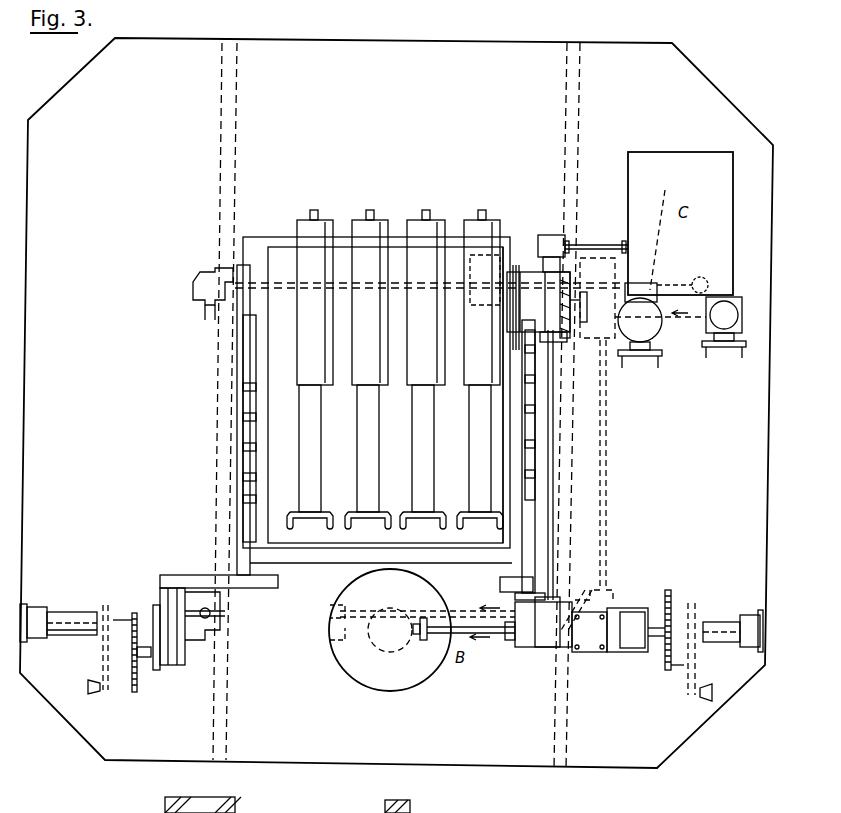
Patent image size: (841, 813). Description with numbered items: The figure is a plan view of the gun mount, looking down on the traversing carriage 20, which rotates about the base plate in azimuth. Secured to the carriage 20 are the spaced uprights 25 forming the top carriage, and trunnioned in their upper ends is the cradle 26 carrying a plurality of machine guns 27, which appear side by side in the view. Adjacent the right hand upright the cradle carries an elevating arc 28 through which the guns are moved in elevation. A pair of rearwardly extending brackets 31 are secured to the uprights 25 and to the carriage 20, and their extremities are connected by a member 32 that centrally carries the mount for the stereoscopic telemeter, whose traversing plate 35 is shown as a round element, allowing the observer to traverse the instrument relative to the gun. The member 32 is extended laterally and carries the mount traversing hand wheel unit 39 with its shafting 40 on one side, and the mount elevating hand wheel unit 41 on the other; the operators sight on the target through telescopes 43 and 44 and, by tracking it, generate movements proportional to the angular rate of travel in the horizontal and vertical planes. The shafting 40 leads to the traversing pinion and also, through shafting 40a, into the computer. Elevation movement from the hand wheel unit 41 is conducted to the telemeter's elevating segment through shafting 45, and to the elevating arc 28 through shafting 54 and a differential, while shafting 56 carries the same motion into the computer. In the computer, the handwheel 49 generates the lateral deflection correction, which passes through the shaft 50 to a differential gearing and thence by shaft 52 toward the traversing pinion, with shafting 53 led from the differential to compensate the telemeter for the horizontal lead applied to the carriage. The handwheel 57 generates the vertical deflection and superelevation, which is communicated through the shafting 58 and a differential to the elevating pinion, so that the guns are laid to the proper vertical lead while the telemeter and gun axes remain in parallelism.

The traversing carriage 20 is at (262, 246).
The uprights 25 is at (248, 345).
The cradle 26 is at (395, 448).
The machine guns 27 is at (367, 236).
The elevating arc 28 is at (510, 440).
The brackets 31 is at (245, 541).
The member 32 is at (273, 588).
The traversing plate 35 is at (355, 672).
The mount traversing hand wheel unit 39 is at (131, 688).
The shafting 40 is at (210, 318).
The shafting 40a is at (672, 281).
The mount elevating hand wheel unit 41 is at (673, 607).
The telescope 43 is at (100, 689).
The telescope 44 is at (688, 688).
The shafting 45 is at (503, 636).
The handwheel 49 is at (724, 362).
The shaft 50 is at (685, 320).
The shaft 52 is at (520, 262).
The shafting 53 is at (466, 617).
The shafting 54 is at (549, 497).
The shafting 56 is at (594, 246).
The handwheel 57 is at (640, 368).
The shafting 58 is at (598, 296).